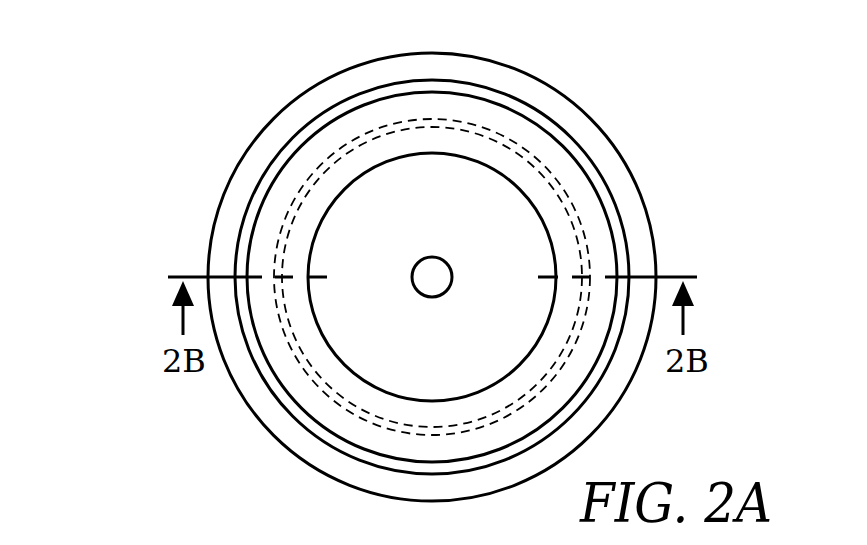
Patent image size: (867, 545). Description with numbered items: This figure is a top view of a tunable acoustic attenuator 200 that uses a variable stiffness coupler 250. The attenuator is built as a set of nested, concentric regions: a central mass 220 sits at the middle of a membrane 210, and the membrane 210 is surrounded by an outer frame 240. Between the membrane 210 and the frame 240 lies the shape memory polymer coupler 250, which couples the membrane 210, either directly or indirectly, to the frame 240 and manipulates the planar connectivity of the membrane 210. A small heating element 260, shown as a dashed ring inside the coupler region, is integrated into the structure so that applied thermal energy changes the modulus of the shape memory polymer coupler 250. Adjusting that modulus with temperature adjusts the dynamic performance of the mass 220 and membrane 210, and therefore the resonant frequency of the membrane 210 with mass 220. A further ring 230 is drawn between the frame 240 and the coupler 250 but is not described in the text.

The tunable acoustic attenuator 200 is at (388, 277).
The membrane 210 is at (500, 236).
The mass 220 is at (432, 268).
The cladding layer 230 is at (518, 106).
The frame 240 is at (498, 74).
The variable stiffness coupler 250 is at (538, 152).
The heating element 260 is at (560, 188).